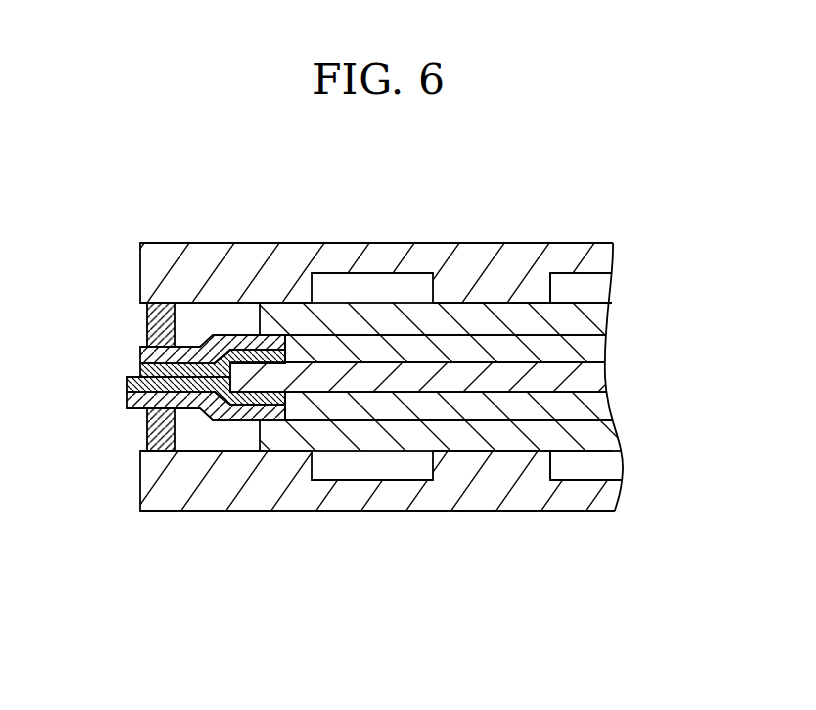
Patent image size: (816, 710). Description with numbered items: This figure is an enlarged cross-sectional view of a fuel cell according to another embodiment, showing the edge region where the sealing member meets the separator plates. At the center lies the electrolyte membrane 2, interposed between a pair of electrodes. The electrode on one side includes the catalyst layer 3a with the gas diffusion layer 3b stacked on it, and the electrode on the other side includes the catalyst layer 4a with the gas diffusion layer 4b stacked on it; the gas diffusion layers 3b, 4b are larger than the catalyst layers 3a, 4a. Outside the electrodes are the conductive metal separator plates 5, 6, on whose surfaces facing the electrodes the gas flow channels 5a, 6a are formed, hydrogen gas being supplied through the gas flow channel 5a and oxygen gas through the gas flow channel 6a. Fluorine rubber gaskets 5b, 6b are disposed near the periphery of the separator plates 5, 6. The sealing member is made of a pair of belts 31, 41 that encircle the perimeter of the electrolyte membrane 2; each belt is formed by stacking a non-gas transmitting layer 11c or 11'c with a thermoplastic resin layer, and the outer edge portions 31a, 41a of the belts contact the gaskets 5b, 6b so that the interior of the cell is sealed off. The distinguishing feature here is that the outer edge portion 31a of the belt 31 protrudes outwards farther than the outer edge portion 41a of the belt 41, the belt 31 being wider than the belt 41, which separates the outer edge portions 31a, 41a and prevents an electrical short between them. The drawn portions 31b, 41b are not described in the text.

The electrolyte membrane 2 is at (597, 377).
The catalyst layer 3a is at (603, 345).
The gas diffusion layer 3b is at (600, 316).
The catalyst layer 4a is at (600, 405).
The gas diffusion layer 4b is at (600, 435).
The separator plate 5 is at (600, 265).
The gas flow channel 5a is at (571, 280).
The gasket 5b is at (150, 313).
The separator plate 6 is at (600, 493).
The gas flow channel 6a is at (578, 466).
The gasket 6b is at (147, 432).
The non-gas transmitting layer 11c is at (140, 371).
The non-gas transmitting layer 11'c is at (157, 393).
The belt 31 is at (183, 488).
The outer edge portion 31a is at (126, 401).
The bent portion of cathode current collector 31b is at (290, 421).
The belt 41 is at (193, 269).
The outer edge portion 41a is at (140, 352).
The bent portion of anode current collector 41b is at (290, 348).